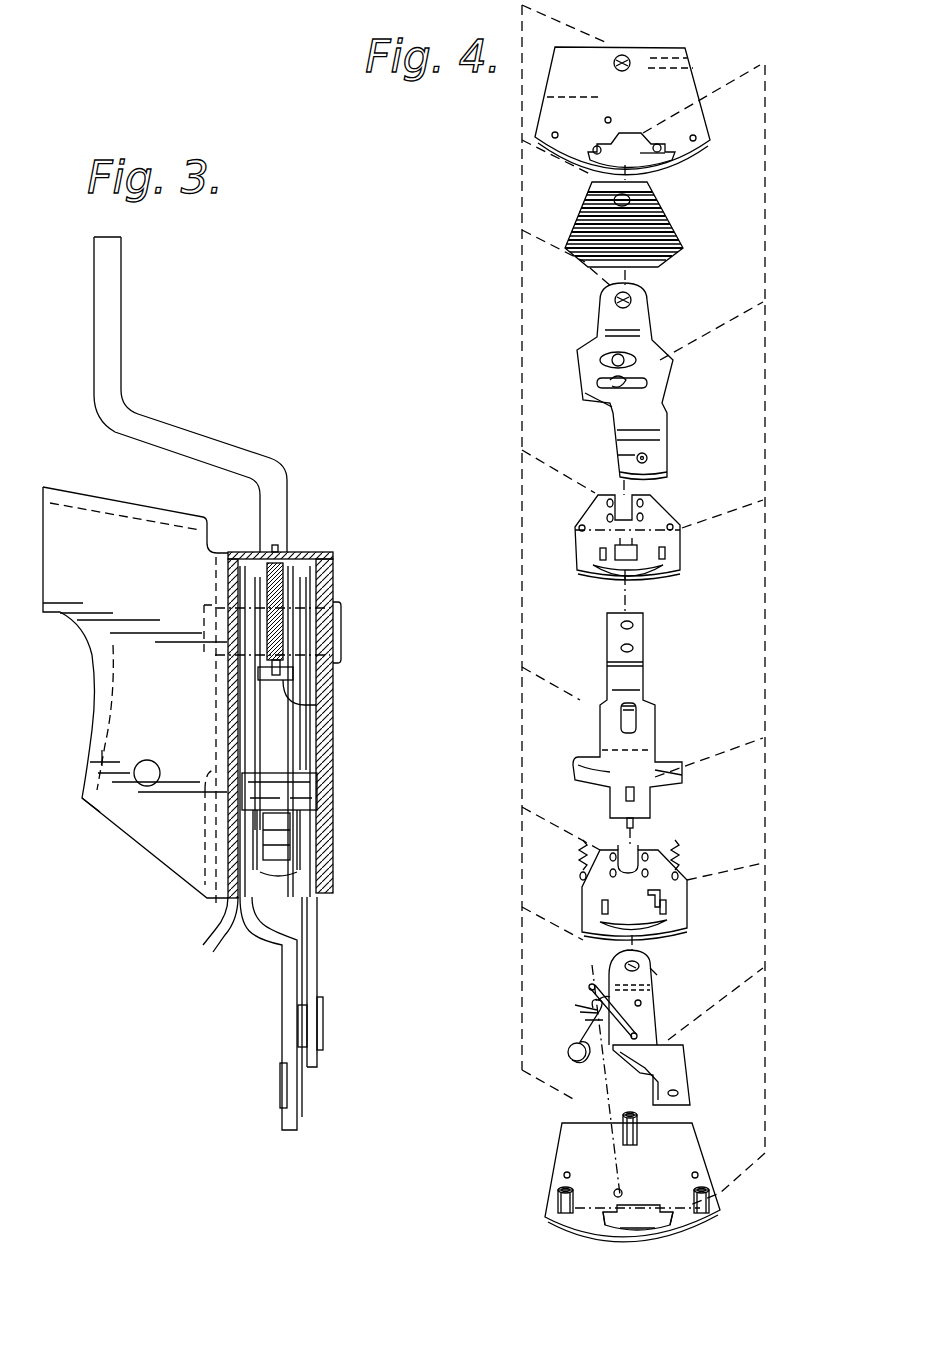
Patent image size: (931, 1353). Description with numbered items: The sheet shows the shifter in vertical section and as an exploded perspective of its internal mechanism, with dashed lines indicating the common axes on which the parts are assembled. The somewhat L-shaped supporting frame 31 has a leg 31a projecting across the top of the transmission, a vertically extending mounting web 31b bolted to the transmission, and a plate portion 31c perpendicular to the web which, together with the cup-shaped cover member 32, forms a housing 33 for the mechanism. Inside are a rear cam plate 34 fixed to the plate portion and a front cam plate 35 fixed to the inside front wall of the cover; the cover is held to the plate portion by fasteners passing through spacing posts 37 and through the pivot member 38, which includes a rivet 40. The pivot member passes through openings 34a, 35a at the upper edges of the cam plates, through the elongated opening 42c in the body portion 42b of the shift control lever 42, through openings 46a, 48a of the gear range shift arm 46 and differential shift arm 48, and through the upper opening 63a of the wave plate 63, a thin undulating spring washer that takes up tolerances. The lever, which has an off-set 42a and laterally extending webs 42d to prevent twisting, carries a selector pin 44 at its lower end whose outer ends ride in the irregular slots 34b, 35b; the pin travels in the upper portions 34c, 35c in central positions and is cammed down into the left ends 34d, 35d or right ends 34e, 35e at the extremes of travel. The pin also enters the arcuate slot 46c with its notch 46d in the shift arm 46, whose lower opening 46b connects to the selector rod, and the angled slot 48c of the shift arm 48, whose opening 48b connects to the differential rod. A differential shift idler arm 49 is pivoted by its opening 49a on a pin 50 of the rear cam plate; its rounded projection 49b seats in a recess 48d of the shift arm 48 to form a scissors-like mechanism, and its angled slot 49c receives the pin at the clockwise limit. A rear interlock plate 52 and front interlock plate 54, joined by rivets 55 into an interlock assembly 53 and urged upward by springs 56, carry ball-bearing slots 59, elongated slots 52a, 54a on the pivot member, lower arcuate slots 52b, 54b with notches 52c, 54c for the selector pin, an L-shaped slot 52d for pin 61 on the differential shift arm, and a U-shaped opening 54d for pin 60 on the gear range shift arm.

In FIG. 3, the supporting frame 31 is at (63, 502).
In FIG. 3, the leg 31a is at (42, 605).
In FIG. 3, the mounting web 31b is at (127, 807).
In FIG. 3, the plate portion 31c is at (215, 730).
In FIG. 3, the cover member 32 is at (333, 562).
In FIG. 3, the housing 33 is at (352, 880).
In FIG. 3, the rear cam plate 34 is at (237, 930).
In FIG. 4, the rear cam plate 34 is at (577, 1145).
In FIG. 4, the opening 34a is at (638, 1138).
In FIG. 4, the slot 34b is at (652, 1232).
In FIG. 4, the upper slot portion 34c is at (640, 1207).
In FIG. 4, the left slot end 34d is at (605, 1228).
In FIG. 4, the right slot end 34e is at (668, 1227).
In FIG. 3, the front cam plate 35 is at (325, 890).
In FIG. 4, the front cam plate 35 is at (680, 65).
In FIG. 4, the opening 35a is at (627, 57).
In FIG. 4, the slot 35b is at (657, 153).
In FIG. 4, the upper slot portion 35c is at (627, 133).
In FIG. 4, the left slot end 35d is at (597, 150).
In FIG. 4, the right slot end 35e is at (660, 143).
In FIG. 3, the spacing posts 37 is at (303, 783).
In FIG. 4, the spacing posts 37 is at (558, 1200).
In FIG. 3, the pivot member 38 is at (352, 650).
In FIG. 4, the pivot member 38 is at (640, 1119).
In FIG. 3, the rivet 40 is at (342, 630).
In FIG. 3, the shift control lever 42 is at (120, 292).
In FIG. 4, the shift control lever 42 is at (637, 683).
In FIG. 3, the bent portion of actuating arm 42a is at (190, 440).
In FIG. 4, the body portion 42b is at (647, 740).
In FIG. 4, the elongated opening 42c is at (618, 725).
In FIG. 4, the laterally extending webs 42d is at (578, 775).
In FIG. 3, the selector pin 44 is at (320, 850).
In FIG. 4, the selector pin 44 is at (640, 797).
In FIG. 3, the gear range shift arm 46 is at (308, 968).
In FIG. 4, the gear range shift arm 46 is at (665, 380).
In FIG. 4, the opening 46a is at (630, 302).
In FIG. 3, the opening 46b is at (320, 1030).
In FIG. 4, the opening 46b is at (645, 458).
In FIG. 4, the arcuate slot 46c is at (605, 405).
In FIG. 4, the notch 46d is at (600, 380).
In FIG. 3, the differential shift arm 48 is at (293, 1010).
In FIG. 4, the differential shift arm 48 is at (625, 966).
In FIG. 4, the opening 48a is at (632, 966).
In FIG. 3, the opening 48b is at (290, 1097).
In FIG. 4, the opening 48b is at (678, 1090).
In FIG. 4, the angled slot 48c is at (637, 1037).
In FIG. 4, the recess 48d is at (657, 970).
In FIG. 4, the differential shift idler arm 49 is at (563, 1028).
In FIG. 4, the opening 49a is at (580, 1012).
In FIG. 4, the rounded projection 49b is at (607, 997).
In FIG. 4, the angled slot 49c is at (572, 1058).
In FIG. 4, the pin 50 is at (615, 1192).
In FIG. 3, the rear interlock plate 52 is at (260, 553).
In FIG. 4, the rear interlock plate 52 is at (583, 888).
In FIG. 4, the elongated slot 52a is at (633, 848).
In FIG. 4, the arcuate slot 52b is at (675, 918).
In FIG. 4, the notch 52c is at (652, 903).
In FIG. 4, the L-shaped slot 52d is at (685, 873).
In FIG. 3, the interlock assembly 53 is at (278, 884).
In FIG. 3, the front interlock plate 54 is at (298, 575).
In FIG. 4, the front interlock plate 54 is at (583, 543).
In FIG. 4, the elongated slot 54a is at (635, 496).
In FIG. 4, the arcuate slot 54b is at (607, 570).
In FIG. 4, the notch 54c is at (630, 577).
In FIG. 4, the U-shaped opening 54d is at (645, 540).
In FIG. 3, the rivets 55 is at (333, 707).
In FIG. 3, the springs 56 is at (273, 647).
In FIG. 4, the springs 56 is at (582, 855).
In FIG. 4, the slots 59 is at (605, 505).
In FIG. 4, the pin 60 is at (620, 358).
In FIG. 4, the pin 61 is at (641, 1002).
In FIG. 3, the wave plate 63 is at (318, 598).
In FIG. 4, the wave plate 63 is at (655, 225).
In FIG. 4, the upper opening 63a is at (630, 200).